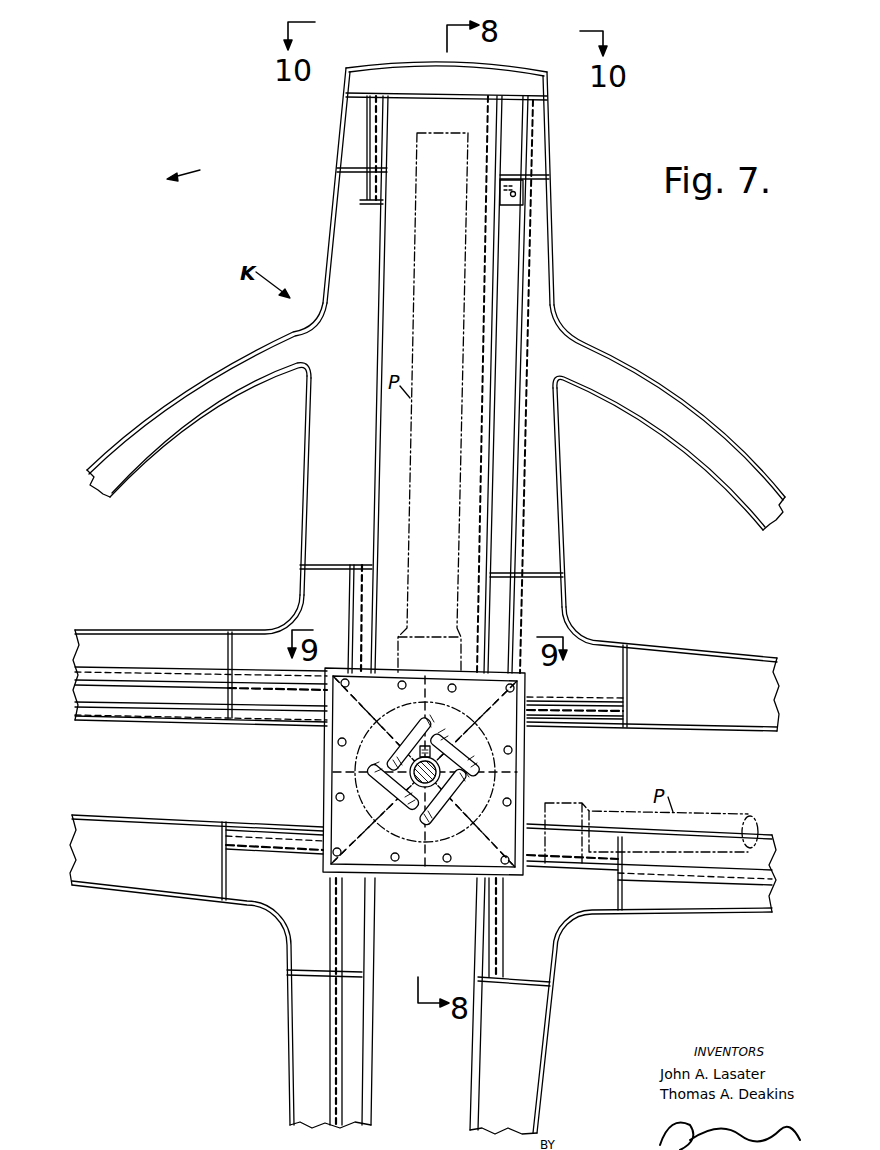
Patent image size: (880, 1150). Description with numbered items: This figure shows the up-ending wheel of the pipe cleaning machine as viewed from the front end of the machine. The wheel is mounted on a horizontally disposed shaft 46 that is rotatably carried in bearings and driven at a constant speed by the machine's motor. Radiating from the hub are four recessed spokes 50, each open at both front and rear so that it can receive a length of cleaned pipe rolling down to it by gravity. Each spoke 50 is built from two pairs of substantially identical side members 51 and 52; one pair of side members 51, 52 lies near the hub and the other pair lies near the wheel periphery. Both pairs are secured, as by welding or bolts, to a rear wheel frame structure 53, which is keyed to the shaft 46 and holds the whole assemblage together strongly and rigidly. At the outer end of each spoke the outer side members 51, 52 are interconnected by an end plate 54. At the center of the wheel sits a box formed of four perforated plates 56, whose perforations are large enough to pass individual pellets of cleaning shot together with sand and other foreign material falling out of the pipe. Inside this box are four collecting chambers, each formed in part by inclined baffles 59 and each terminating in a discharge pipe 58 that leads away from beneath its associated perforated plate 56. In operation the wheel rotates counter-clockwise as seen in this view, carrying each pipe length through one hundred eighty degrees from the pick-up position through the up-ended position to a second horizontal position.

The shaft 46 is at (404, 759).
The spoke 50 is at (480, 157).
The side member 51 is at (368, 130).
The side member 52 is at (515, 130).
The wheel frame structure 53 is at (306, 416).
The end plate 54 is at (443, 96).
The perforated plate 56 is at (392, 672).
The discharge pipe 58 is at (448, 740).
The inclined baffle 59 is at (431, 699).